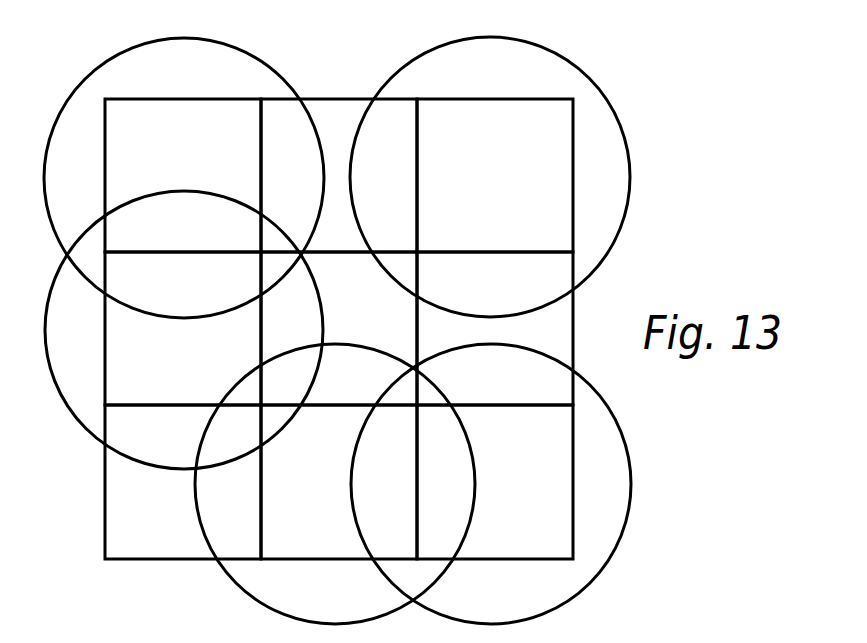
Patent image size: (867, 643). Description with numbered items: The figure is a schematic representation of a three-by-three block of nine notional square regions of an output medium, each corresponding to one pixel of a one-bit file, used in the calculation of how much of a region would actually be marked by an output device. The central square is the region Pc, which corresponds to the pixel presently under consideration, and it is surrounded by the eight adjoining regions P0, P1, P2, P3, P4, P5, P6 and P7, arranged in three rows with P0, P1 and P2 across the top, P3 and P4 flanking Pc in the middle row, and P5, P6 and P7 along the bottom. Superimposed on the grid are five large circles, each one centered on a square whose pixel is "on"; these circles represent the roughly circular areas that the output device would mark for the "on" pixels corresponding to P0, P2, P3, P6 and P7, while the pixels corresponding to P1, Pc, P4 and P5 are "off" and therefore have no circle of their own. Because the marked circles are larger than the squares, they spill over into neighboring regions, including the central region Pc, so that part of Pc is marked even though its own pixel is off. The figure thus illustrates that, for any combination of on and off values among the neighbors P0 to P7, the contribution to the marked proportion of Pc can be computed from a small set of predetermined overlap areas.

The notional square region adjoining the center region P0 is at (183, 175).
The notional square region adjoining the center region P1 is at (339, 175).
The notional square region adjoining the center region P2 is at (495, 175).
The notional square region adjoining the center region P3 is at (183, 328).
The notional square region of the pixel under consideration Pc is at (339, 328).
The notional square region adjoining the center region P4 is at (495, 328).
The notional square region adjoining the center region P5 is at (183, 482).
The notional square region adjoining the center region P6 is at (339, 482).
The notional square region adjoining the center region P7 is at (495, 482).